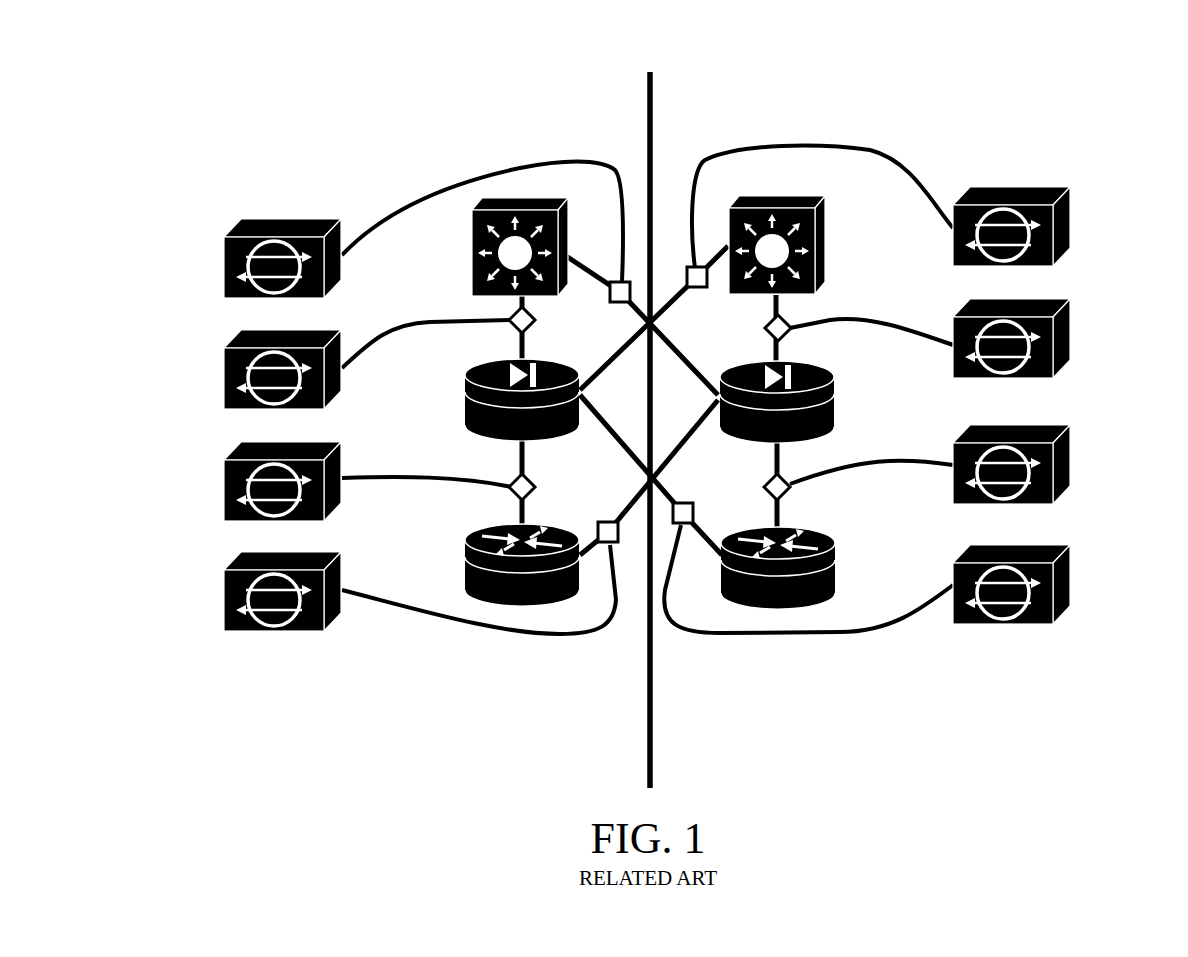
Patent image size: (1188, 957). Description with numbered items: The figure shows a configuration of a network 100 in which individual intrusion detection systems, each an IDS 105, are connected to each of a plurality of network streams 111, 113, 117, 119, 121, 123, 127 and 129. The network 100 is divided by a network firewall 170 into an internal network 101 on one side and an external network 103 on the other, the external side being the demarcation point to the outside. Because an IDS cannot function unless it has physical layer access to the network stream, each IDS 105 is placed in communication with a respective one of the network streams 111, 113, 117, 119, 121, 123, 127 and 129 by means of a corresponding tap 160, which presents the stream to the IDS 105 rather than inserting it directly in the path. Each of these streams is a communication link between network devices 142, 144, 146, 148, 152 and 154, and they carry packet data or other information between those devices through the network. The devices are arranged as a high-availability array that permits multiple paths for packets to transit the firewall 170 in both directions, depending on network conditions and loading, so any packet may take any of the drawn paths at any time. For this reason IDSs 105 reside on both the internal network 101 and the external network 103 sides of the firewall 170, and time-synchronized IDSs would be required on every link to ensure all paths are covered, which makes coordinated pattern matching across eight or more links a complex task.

The network 100 is at (1100, 749).
The internal network 101 is at (862, 84).
The external network 103 is at (425, 84).
The IDS 105 is at (218, 254).
The network stream 111 is at (630, 305).
The network stream 113 is at (678, 307).
The network stream 117 is at (615, 450).
The network stream 119 is at (687, 445).
The network stream 121 is at (518, 345).
The network stream 123 is at (790, 345).
The network stream 127 is at (518, 450).
The network stream 129 is at (792, 510).
The network device 142 is at (470, 253).
The network device 144 is at (827, 240).
The network device 146 is at (463, 391).
The network device 148 is at (838, 394).
The network device 152 is at (463, 554).
The network device 154 is at (838, 554).
The tap 160 is at (616, 281).
The network firewall 170 is at (645, 697).